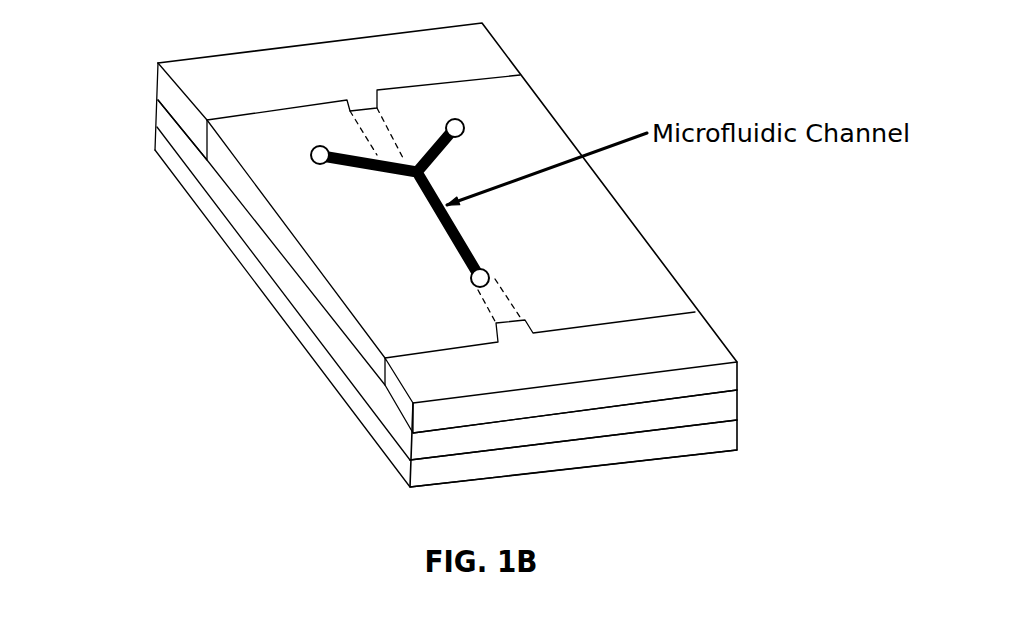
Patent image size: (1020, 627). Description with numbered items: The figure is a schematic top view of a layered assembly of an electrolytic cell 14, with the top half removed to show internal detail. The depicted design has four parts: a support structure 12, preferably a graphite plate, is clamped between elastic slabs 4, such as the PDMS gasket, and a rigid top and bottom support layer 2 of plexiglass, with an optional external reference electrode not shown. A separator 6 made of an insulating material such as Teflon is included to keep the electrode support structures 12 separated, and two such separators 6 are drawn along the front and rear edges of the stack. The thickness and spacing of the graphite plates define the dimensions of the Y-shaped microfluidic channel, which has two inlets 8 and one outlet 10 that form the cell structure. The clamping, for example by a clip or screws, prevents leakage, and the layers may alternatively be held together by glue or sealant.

The rigid top and bottom support layer 2 is at (437, 470).
The elastic slab 4 is at (727, 410).
The separator 6 is at (210, 77).
The inlet 8 is at (311, 165).
The outlet 10 is at (490, 273).
The support structure 12 is at (640, 242).
The cell 14 is at (603, 78).